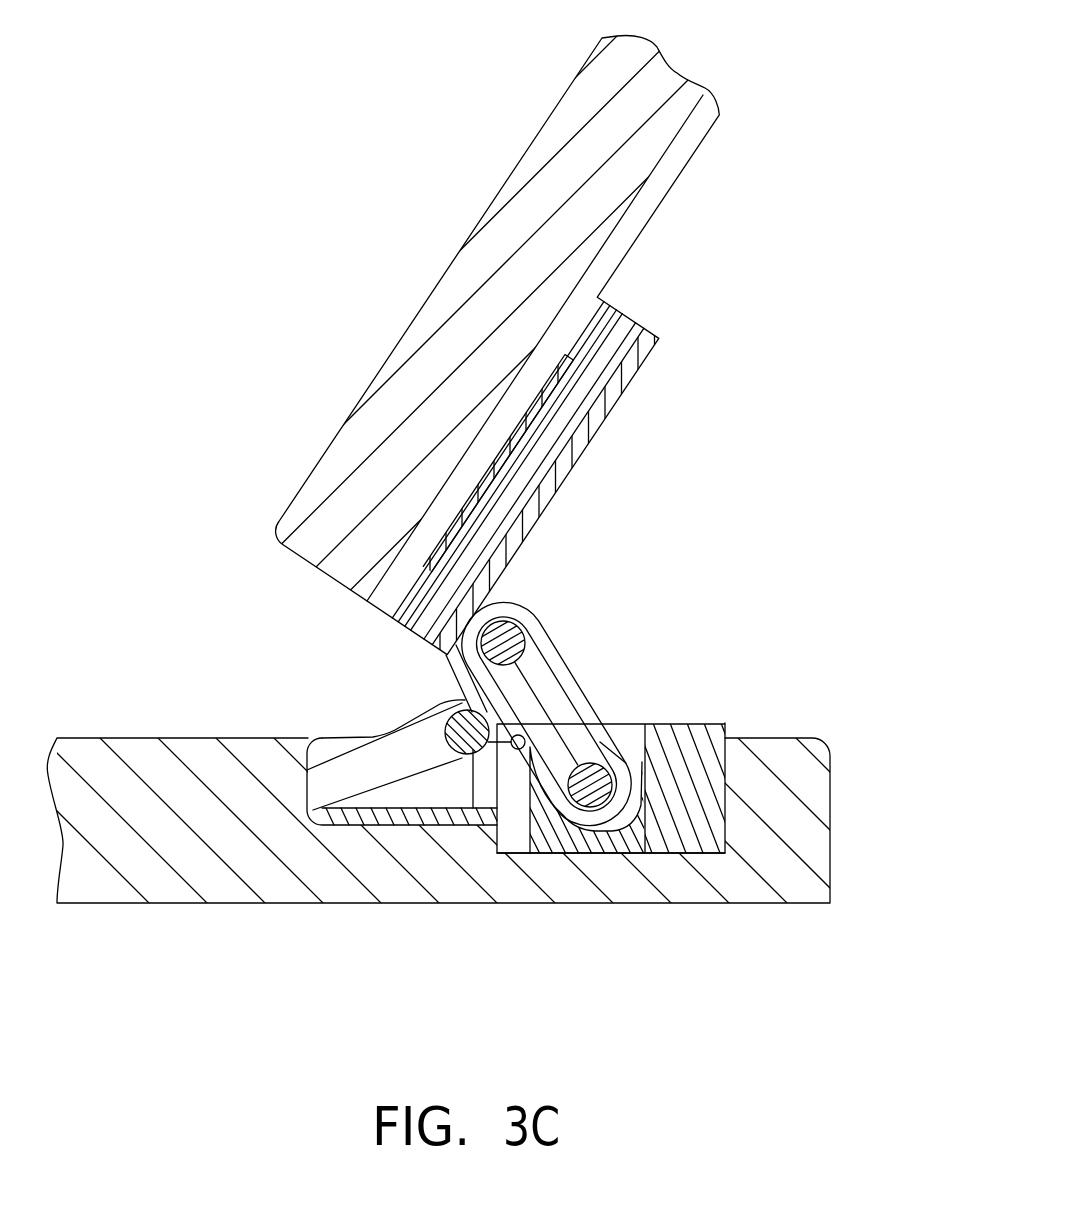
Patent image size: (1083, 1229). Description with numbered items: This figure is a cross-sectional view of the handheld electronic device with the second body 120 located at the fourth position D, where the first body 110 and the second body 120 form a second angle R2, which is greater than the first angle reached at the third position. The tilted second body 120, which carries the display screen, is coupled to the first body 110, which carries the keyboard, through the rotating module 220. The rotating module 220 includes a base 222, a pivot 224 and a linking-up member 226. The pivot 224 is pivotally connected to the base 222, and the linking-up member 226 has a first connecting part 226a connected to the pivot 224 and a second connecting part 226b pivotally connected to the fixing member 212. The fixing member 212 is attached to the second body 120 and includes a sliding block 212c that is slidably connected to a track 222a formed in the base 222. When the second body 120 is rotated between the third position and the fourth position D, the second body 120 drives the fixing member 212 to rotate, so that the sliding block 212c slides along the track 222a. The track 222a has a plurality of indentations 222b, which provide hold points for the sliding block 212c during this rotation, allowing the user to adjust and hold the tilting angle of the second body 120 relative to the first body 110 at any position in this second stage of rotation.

The first body 110 is at (790, 820).
The second body 120 is at (637, 95).
The fixing member 212 is at (614, 398).
The sliding block 212c is at (455, 750).
The rotating module 220 is at (402, 665).
The base 222 is at (690, 815).
The track 222a is at (399, 801).
The indentations 222b is at (387, 719).
The pivot 224 is at (590, 808).
The linking-up member 226 is at (567, 700).
The first connecting part 226a is at (635, 716).
The second connecting part 226b is at (549, 606).
The fourth position D is at (547, 98).
The second angle R2 is at (799, 724).